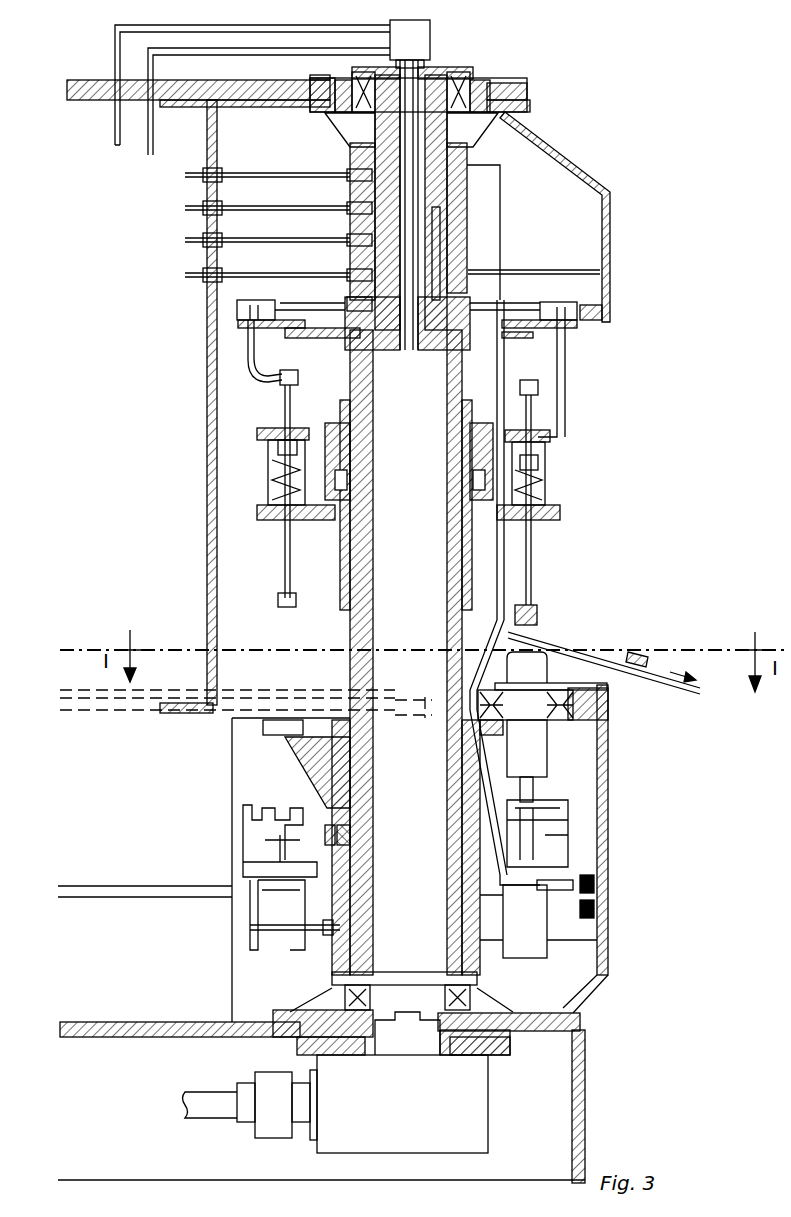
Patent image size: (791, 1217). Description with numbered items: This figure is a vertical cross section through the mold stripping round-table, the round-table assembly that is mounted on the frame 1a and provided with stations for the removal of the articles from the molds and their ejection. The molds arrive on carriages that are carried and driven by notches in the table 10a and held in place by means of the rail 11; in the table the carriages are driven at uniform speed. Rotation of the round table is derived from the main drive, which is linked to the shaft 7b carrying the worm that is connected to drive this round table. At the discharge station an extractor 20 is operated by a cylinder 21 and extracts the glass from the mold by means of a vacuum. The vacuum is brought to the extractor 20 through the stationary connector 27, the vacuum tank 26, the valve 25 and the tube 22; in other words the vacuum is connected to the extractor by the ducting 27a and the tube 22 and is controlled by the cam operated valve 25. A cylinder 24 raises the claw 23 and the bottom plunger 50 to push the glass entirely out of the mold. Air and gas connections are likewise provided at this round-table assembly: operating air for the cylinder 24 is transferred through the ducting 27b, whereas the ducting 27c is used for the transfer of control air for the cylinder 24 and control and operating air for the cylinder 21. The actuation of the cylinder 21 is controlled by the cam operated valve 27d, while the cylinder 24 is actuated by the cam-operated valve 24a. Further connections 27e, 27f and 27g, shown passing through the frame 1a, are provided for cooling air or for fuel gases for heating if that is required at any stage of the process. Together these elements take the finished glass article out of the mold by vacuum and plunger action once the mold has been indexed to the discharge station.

The frame 1a is at (78, 92).
The shaft 7b is at (200, 1112).
The table 10a is at (345, 757).
The rail 11 is at (592, 710).
The extractor 20 is at (530, 565).
The cylinder 21 is at (540, 476).
The tube 22 is at (250, 362).
The claw 23 is at (272, 836).
The cylinder 24 is at (530, 912).
The cam-operated valve 24a is at (597, 886).
The valve 25 is at (245, 305).
The vacuum tank 26 is at (483, 80).
The stationary connector 27 is at (418, 42).
The ducting 27a is at (118, 146).
The ducting 27b is at (152, 148).
The ducting 27c is at (185, 208).
The cam operated valve 27d is at (578, 322).
The connection 27e is at (185, 176).
The connection 27f is at (185, 241).
The bolt 27g is at (185, 276).
The bottom plunger 50 is at (530, 790).